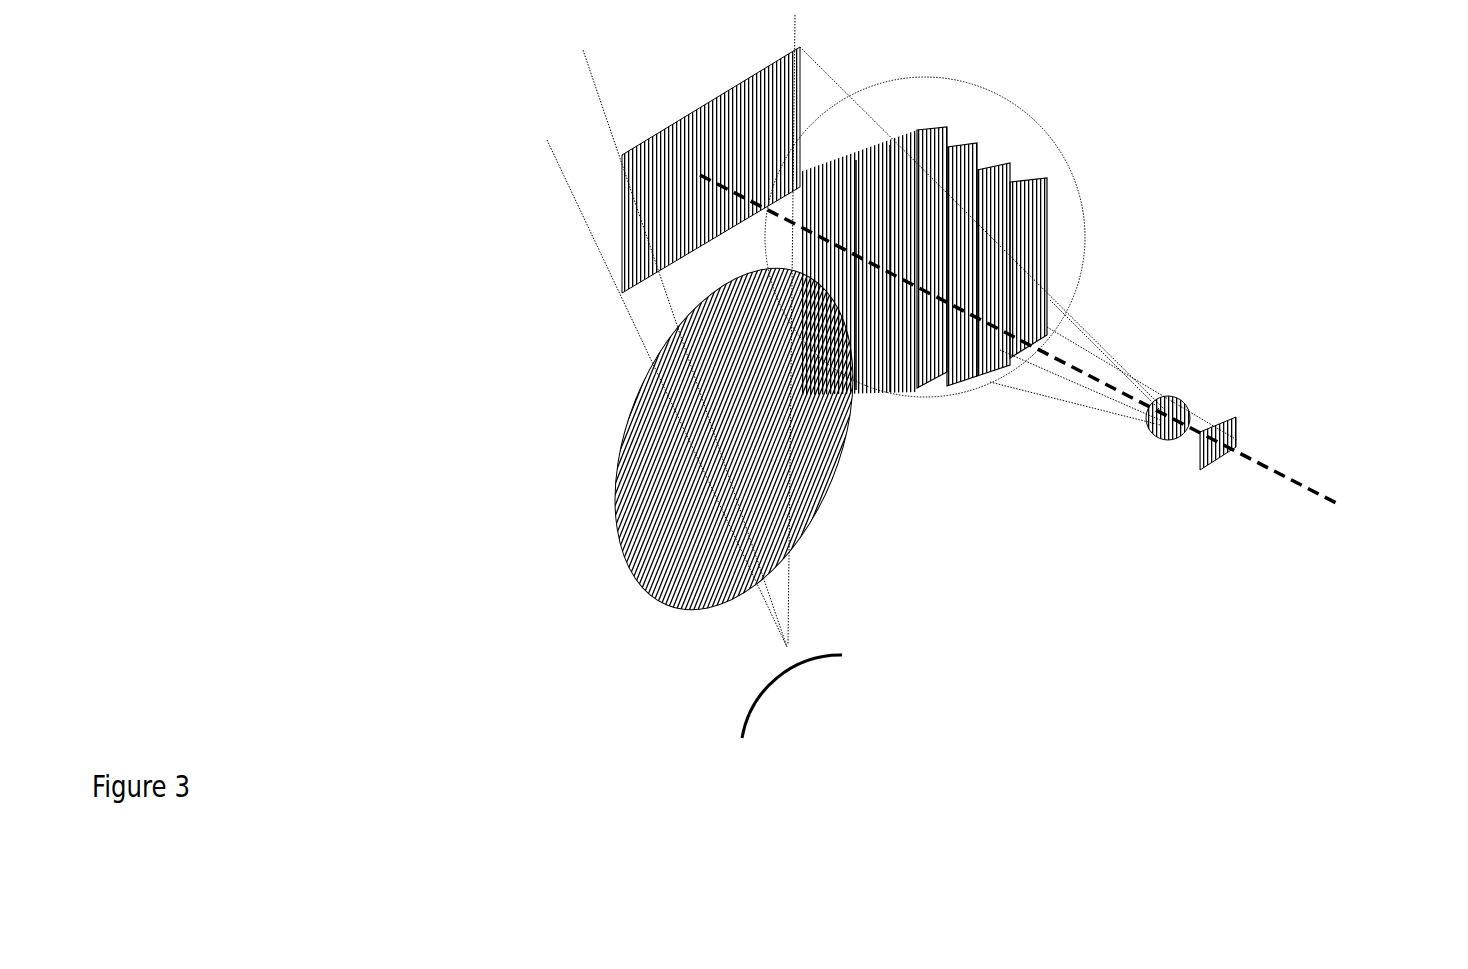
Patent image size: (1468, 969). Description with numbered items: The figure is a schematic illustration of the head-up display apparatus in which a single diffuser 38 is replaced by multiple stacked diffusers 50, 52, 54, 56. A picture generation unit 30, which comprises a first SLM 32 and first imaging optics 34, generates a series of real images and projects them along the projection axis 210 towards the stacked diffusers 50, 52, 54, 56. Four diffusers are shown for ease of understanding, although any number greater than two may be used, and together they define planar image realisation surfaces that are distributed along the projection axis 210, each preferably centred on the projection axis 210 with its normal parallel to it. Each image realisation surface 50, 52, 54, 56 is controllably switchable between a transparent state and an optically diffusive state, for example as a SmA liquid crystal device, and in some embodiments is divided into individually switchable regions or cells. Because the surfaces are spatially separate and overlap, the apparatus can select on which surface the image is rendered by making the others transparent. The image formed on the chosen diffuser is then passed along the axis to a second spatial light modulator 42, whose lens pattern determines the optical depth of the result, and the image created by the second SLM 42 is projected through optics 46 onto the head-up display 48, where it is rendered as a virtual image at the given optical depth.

The picture generation unit 30 is at (1150, 441).
The first SLM 32 is at (1200, 447).
The first imaging optics 34 is at (1147, 427).
The diffuser 38 is at (1078, 300).
The second spatial light modulator 42 is at (620, 193).
The optics 46 is at (613, 467).
The head-up display 48 is at (800, 677).
The diffuser 50 is at (1040, 207).
The diffuser 52 is at (987, 170).
The diffuser 54 is at (968, 148).
The diffuser 56 is at (913, 132).
The projection axis 210 is at (1353, 490).